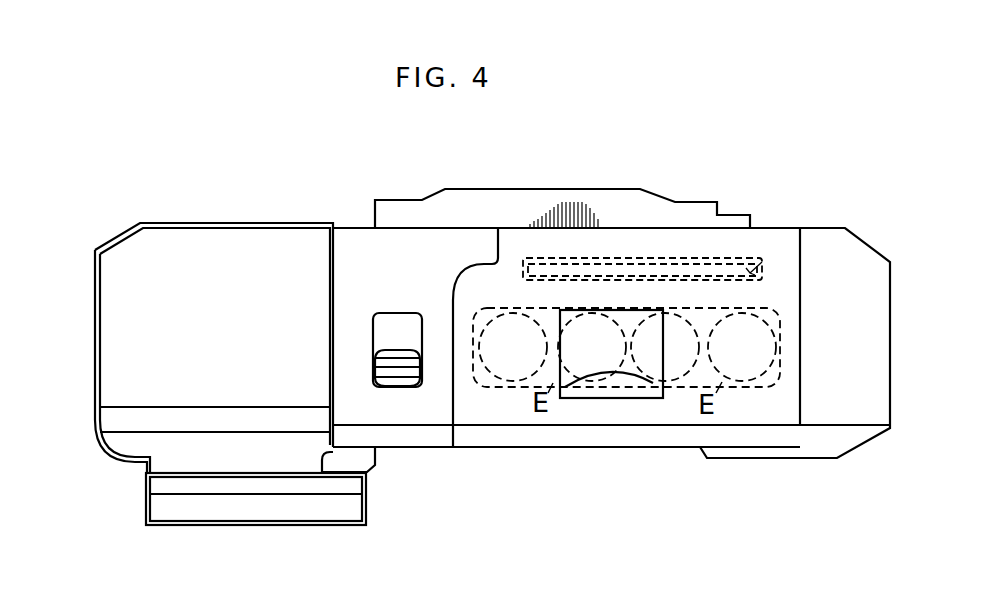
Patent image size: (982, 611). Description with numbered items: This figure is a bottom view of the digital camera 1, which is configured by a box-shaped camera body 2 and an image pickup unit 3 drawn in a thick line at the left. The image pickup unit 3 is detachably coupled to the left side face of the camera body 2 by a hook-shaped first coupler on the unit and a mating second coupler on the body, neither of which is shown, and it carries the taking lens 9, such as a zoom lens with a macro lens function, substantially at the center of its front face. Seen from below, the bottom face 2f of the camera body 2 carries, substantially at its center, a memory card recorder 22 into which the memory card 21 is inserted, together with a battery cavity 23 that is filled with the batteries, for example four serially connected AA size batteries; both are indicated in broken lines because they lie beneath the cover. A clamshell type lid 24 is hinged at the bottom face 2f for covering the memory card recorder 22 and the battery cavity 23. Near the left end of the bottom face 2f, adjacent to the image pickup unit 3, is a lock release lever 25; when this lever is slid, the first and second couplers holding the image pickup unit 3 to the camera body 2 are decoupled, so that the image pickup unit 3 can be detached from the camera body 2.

The digital camera 1 is at (412, 184).
The camera body 2 is at (773, 229).
The bottom face 2f is at (481, 243).
The image pickup unit 3 is at (246, 223).
The taking lens 9 is at (238, 526).
The memory card 21 is at (757, 277).
The memory card recorder 22 is at (762, 259).
The battery cavity 23 is at (780, 352).
The clamshell type lid 24 is at (783, 418).
The lock release lever 25 is at (403, 350).